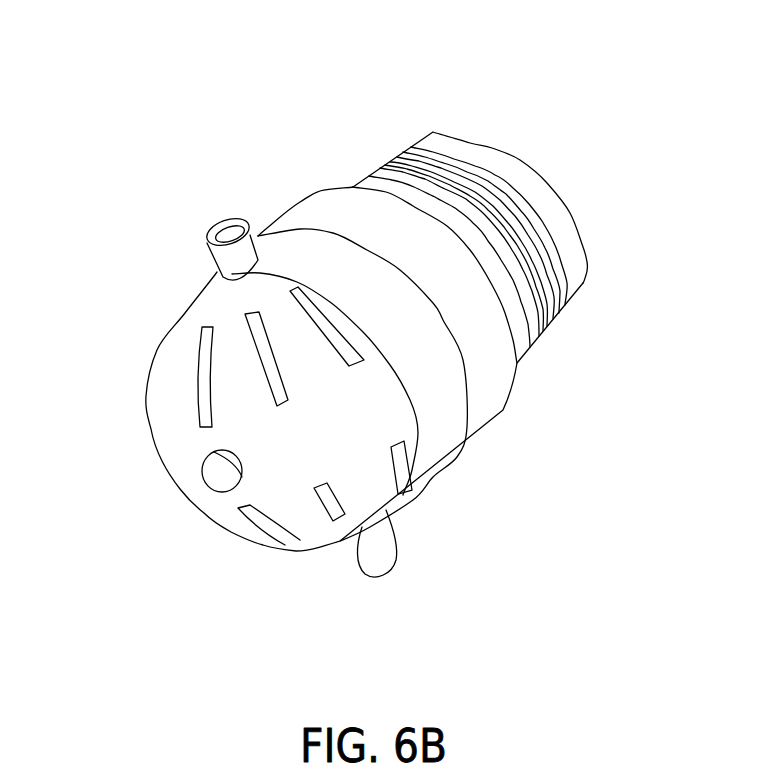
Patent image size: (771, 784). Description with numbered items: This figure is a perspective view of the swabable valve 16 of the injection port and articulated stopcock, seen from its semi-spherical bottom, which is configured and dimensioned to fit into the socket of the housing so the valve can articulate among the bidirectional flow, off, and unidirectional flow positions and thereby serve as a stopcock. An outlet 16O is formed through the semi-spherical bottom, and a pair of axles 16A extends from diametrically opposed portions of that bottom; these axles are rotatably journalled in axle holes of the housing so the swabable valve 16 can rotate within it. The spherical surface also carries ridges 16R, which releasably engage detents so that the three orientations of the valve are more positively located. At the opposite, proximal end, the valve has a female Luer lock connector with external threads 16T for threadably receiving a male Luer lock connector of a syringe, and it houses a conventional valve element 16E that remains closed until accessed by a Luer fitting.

The swabable valve 16 is at (505, 412).
The axles 16A is at (222, 226).
The valve element 16E is at (493, 157).
The external threads 16T is at (585, 287).
The ridges 16R is at (288, 293).
The outlet 16O is at (200, 470).